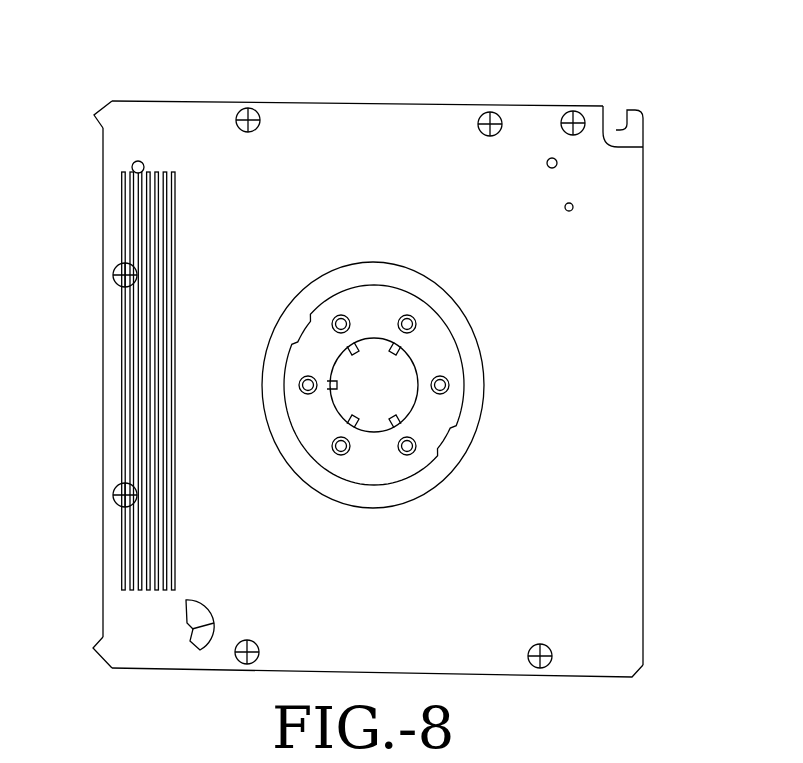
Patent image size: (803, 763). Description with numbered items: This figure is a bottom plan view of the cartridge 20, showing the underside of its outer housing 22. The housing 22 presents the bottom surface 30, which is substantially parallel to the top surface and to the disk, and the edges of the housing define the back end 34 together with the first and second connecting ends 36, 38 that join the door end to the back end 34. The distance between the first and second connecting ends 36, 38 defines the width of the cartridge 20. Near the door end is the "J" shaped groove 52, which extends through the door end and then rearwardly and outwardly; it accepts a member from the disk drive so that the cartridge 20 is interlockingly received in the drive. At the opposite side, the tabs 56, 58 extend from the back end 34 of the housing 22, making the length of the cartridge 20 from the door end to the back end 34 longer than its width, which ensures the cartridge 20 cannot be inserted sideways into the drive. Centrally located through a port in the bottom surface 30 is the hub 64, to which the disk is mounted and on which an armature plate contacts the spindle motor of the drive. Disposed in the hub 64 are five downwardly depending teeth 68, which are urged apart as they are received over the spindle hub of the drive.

The cartridge 20 is at (228, 56).
The outer housing 22 is at (185, 650).
The bottom surface 30 is at (370, 135).
The back end 34 is at (103, 388).
The first connecting end 36 is at (498, 108).
The second connecting end 38 is at (502, 678).
The "J" shaped groove 52 is at (624, 118).
The tab 56 is at (94, 115).
The tab 58 is at (93, 648).
The hub 64 is at (385, 305).
The teeth 68 is at (462, 368).